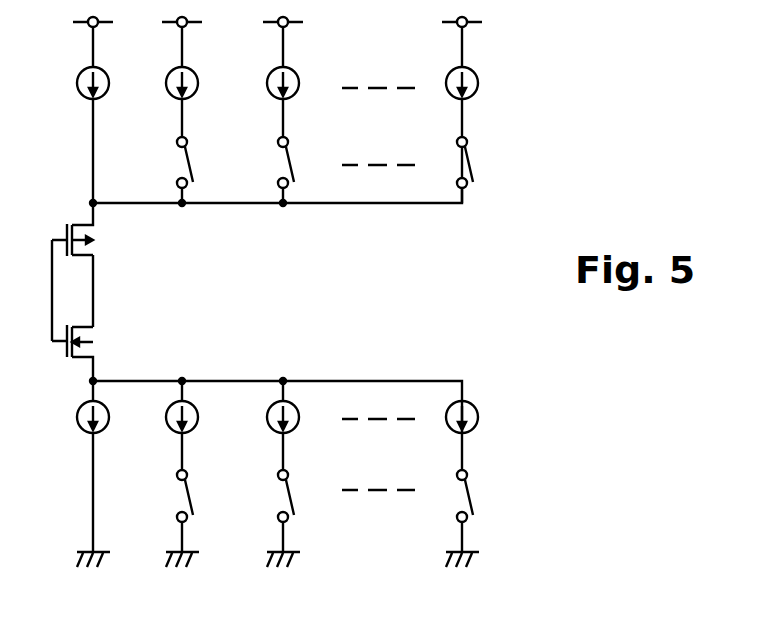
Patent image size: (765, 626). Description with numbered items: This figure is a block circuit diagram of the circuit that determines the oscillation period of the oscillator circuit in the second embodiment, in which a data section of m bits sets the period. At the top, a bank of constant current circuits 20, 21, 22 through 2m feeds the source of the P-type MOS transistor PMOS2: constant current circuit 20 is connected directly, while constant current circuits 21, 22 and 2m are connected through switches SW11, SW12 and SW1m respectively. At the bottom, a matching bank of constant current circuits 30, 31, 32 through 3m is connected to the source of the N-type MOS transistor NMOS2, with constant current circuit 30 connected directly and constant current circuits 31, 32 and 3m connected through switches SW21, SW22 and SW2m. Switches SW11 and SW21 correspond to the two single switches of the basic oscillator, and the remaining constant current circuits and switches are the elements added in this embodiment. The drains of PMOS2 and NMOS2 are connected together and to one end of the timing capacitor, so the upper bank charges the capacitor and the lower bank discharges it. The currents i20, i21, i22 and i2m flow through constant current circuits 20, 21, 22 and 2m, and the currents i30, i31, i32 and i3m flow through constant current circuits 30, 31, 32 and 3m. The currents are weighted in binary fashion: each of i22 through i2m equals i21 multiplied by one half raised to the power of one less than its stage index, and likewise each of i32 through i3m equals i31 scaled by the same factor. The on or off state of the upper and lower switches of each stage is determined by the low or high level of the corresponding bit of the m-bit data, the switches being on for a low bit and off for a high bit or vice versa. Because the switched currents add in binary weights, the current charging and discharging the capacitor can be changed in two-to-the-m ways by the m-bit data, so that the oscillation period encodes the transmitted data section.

The constant current circuit 20 is at (93, 118).
The constant current circuit 21 is at (180, 85).
The constant current circuit 22 is at (284, 85).
The constant current circuit 2m is at (461, 85).
The constant current circuit 30 is at (88, 466).
The constant current circuit 31 is at (180, 425).
The constant current circuit 32 is at (280, 425).
The constant current circuit 3m is at (453, 435).
The current value i20 is at (114, 86).
The current value i21 is at (203, 86).
The current value i22 is at (305, 86).
The current value i2m is at (486, 86).
The current value i30 is at (114, 418).
The current value i31 is at (204, 418).
The current value i32 is at (305, 418).
The current value i3m is at (485, 418).
The switch SW11 is at (177, 165).
The switch SW12 is at (278, 165).
The switch SW1m is at (457, 165).
The switch SW21 is at (180, 498).
The switch SW22 is at (270, 498).
The switch SW2m is at (457, 498).
The P-type MOS transistor PMOS2 is at (98, 242).
The N-type MOS transistor NMOS2 is at (100, 343).